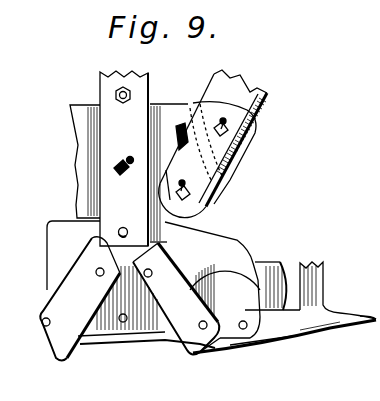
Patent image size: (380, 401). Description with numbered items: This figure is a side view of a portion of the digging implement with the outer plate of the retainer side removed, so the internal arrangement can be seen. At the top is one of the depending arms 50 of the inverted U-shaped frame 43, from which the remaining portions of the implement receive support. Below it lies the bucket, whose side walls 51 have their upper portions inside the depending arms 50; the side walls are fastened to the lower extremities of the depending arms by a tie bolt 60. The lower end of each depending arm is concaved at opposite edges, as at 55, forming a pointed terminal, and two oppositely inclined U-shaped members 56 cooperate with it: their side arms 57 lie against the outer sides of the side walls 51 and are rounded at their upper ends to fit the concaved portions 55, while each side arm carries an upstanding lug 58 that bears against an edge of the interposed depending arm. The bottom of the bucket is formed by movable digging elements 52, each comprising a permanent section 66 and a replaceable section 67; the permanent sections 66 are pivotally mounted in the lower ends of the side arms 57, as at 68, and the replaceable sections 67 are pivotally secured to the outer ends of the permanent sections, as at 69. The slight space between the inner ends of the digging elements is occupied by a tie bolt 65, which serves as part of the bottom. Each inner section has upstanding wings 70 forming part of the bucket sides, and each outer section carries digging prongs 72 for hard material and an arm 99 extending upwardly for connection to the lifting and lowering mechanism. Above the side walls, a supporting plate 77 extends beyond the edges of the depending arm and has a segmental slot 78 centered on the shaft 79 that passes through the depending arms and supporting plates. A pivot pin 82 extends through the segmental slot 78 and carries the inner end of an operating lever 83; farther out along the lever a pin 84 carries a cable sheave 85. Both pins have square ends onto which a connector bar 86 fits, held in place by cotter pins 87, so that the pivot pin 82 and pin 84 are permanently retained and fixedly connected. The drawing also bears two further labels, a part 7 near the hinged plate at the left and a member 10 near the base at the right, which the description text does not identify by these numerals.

The inverted U-shaped frame 43 is at (100, 82).
The depending arms 50 is at (137, 108).
The supporting plates 77 is at (82, 145).
The upstanding lug 58 is at (97, 243).
The shaft 79 is at (122, 157).
The tie bolt 60 is at (124, 228).
The segmental slot 78 is at (187, 110).
The operating levers 83 is at (250, 102).
The pin 84 is at (228, 128).
The cable sheave 85 is at (253, 148).
The connector bars 86 is at (200, 168).
The cotter pins 87 is at (180, 185).
The pivot pins 82 is at (192, 196).
The side walls 51 is at (200, 240).
The concaved portions 55 is at (132, 271).
The side arms 57 is at (186, 297).
The hinged plate 7 is at (77, 290).
The pivotal mounting 68 is at (50, 319).
The pivotal connection 69 is at (242, 321).
The tie bolt 65 is at (125, 323).
The U-shaped members 56 is at (72, 357).
The permanent sections 66 is at (225, 340).
The base 10 is at (320, 317).
The digging elements 52 is at (258, 340).
The replaceable sections 67 is at (285, 333).
The upstanding wings 70 is at (243, 277).
The arms 99 is at (312, 275).
The digging prongs 72 is at (358, 317).